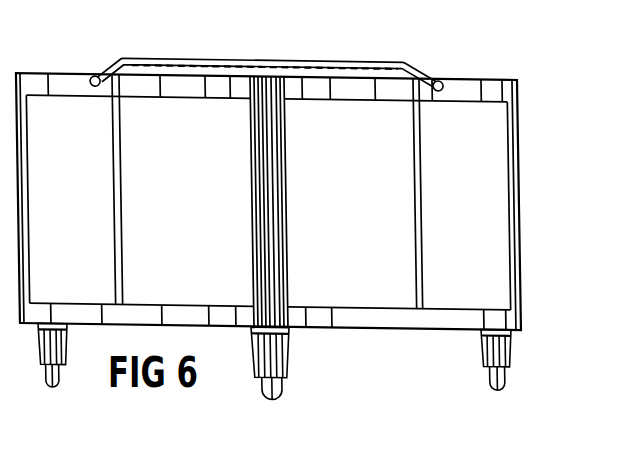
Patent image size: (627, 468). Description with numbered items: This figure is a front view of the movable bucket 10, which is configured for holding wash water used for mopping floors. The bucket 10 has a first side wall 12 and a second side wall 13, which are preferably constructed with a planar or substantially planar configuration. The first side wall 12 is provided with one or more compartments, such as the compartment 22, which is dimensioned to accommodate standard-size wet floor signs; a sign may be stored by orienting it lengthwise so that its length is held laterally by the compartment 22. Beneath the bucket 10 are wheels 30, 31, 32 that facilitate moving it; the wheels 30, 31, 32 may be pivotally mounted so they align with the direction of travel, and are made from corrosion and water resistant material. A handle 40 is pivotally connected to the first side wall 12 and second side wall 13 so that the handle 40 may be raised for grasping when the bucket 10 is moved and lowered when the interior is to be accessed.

The movable bucket 10 is at (552, 198).
The first side wall 12 is at (79, 86).
The second side wall 13 is at (458, 88).
The compartment 22 is at (90, 237).
The front wheel 30 is at (284, 388).
The wheel 31 is at (59, 378).
The rear wheel 32 is at (495, 383).
The handle 40 is at (289, 62).